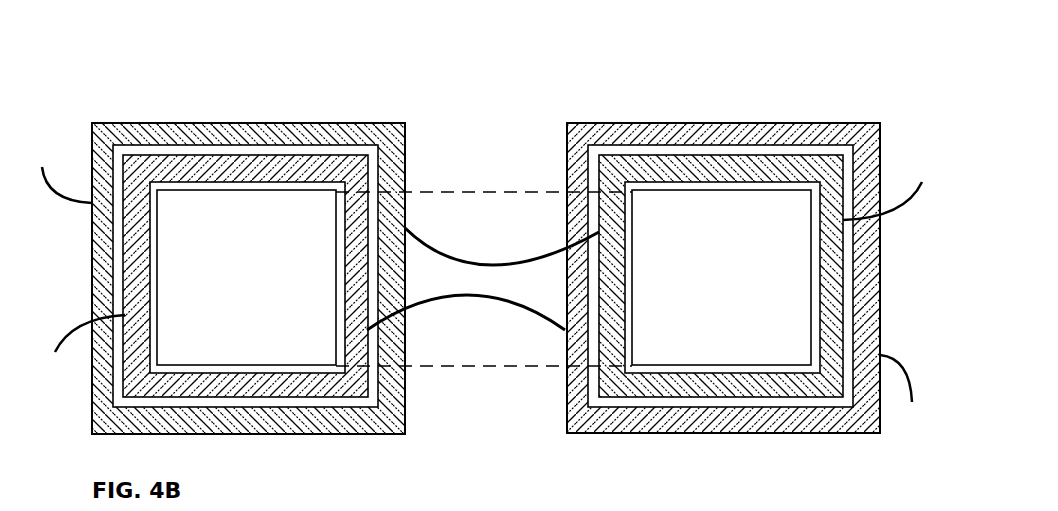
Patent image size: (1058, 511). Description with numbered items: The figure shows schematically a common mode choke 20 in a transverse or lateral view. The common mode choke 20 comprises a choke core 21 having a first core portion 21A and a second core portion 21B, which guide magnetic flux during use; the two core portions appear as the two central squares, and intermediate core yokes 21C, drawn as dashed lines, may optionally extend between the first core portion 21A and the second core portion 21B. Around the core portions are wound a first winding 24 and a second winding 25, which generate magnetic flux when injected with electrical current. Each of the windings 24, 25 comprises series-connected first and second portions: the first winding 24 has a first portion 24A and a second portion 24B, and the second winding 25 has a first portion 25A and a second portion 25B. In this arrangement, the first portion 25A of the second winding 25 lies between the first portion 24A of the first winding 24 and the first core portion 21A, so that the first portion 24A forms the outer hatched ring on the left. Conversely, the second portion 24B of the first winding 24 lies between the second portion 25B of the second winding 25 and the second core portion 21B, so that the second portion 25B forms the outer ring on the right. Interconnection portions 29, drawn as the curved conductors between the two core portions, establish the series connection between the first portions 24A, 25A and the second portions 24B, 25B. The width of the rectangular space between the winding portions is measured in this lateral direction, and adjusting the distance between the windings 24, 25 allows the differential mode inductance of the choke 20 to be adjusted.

The common mode choke 20 is at (152, 50).
The choke core 21 is at (484, 225).
The first core portion 21A is at (246, 277).
The second core portion 21B is at (721, 277).
The intermediate core yoke 21C is at (510, 202).
The first winding 24 is at (67, 203).
The first portion of first winding 24A is at (260, 132).
The second portion of first winding 24B is at (698, 178).
The second winding 25 is at (68, 343).
The first portion of second winding 25A is at (225, 175).
The second portion of second winding 25B is at (710, 132).
The interconnection portion 29 is at (483, 258).